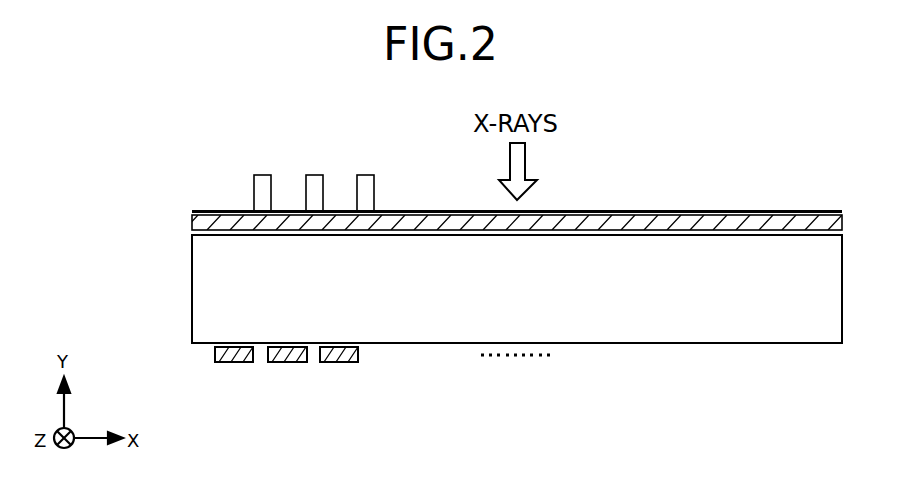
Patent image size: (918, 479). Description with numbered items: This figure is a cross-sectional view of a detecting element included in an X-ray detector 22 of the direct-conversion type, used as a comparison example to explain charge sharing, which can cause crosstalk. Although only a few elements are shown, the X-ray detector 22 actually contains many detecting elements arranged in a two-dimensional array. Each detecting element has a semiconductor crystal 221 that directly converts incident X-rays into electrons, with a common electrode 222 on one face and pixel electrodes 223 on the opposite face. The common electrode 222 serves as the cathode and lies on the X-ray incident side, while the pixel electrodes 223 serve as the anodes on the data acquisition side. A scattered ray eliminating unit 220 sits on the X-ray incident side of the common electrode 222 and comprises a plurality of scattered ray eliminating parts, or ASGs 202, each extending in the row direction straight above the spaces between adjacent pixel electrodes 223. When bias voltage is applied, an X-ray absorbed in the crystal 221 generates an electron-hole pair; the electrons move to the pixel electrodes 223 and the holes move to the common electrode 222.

The X-ray detector 22 is at (763, 161).
The scattered ray eliminating part (ASG) 202 is at (259, 175).
The scattered ray eliminating unit 220 is at (232, 183).
The crystal 221 is at (192, 288).
The common electrode 222 is at (180, 221).
The pixel electrodes 223 is at (202, 352).